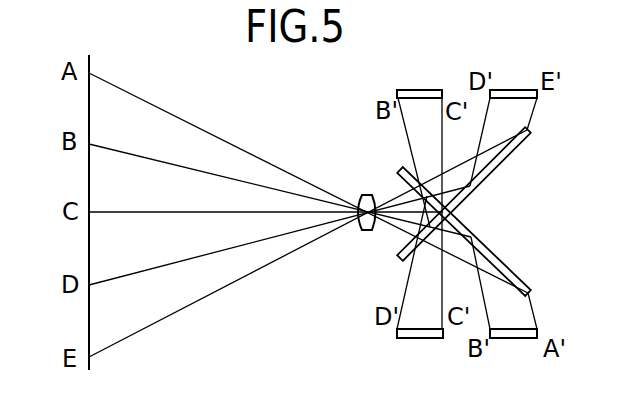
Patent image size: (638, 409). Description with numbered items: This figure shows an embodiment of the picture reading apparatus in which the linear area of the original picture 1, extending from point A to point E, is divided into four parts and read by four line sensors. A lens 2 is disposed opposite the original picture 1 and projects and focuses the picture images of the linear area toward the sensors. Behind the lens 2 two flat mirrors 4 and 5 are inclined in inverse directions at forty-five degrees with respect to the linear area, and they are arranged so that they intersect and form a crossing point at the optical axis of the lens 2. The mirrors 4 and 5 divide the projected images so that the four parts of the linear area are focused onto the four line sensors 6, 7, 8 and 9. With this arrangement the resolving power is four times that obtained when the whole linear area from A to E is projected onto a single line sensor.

The original picture 1 is at (88, 107).
The lens 2 is at (366, 230).
The flat mirror 4 is at (505, 266).
The flat mirror 5 is at (509, 158).
The line sensor 6 is at (520, 338).
The line sensor 7 is at (413, 90).
The line sensor 8 is at (417, 338).
The line sensor 9 is at (503, 90).